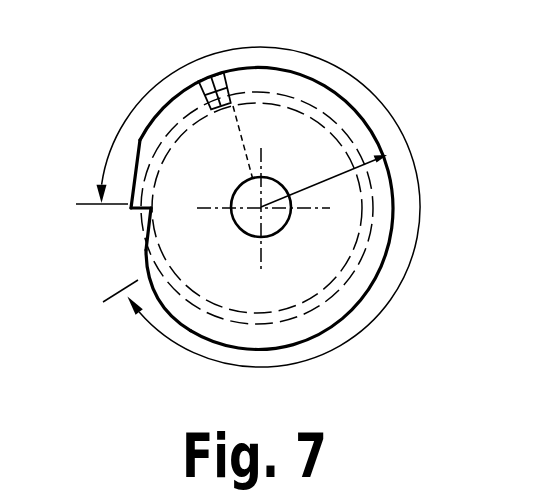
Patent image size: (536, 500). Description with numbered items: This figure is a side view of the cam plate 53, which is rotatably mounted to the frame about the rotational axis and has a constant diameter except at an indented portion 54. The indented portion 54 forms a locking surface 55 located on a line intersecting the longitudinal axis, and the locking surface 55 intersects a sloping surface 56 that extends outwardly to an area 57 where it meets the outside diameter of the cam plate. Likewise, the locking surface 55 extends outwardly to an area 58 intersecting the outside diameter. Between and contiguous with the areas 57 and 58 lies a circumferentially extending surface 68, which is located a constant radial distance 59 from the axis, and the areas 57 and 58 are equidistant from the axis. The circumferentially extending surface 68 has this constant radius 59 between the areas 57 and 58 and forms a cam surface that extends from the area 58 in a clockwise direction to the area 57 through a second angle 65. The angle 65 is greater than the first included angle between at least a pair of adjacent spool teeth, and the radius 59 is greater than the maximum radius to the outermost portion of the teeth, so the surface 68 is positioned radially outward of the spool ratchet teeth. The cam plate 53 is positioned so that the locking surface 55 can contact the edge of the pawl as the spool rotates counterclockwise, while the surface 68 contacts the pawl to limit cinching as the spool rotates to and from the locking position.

The cam plate 53 is at (397, 90).
The indented portion 54 is at (132, 221).
The locking surface 55 is at (142, 207).
The sloping surface 56 is at (146, 243).
The area 57 is at (151, 289).
The area 58 is at (129, 194).
The radial distance 59 is at (325, 200).
The second angle 65 is at (343, 338).
The circumferentially extending surface 68 is at (352, 315).